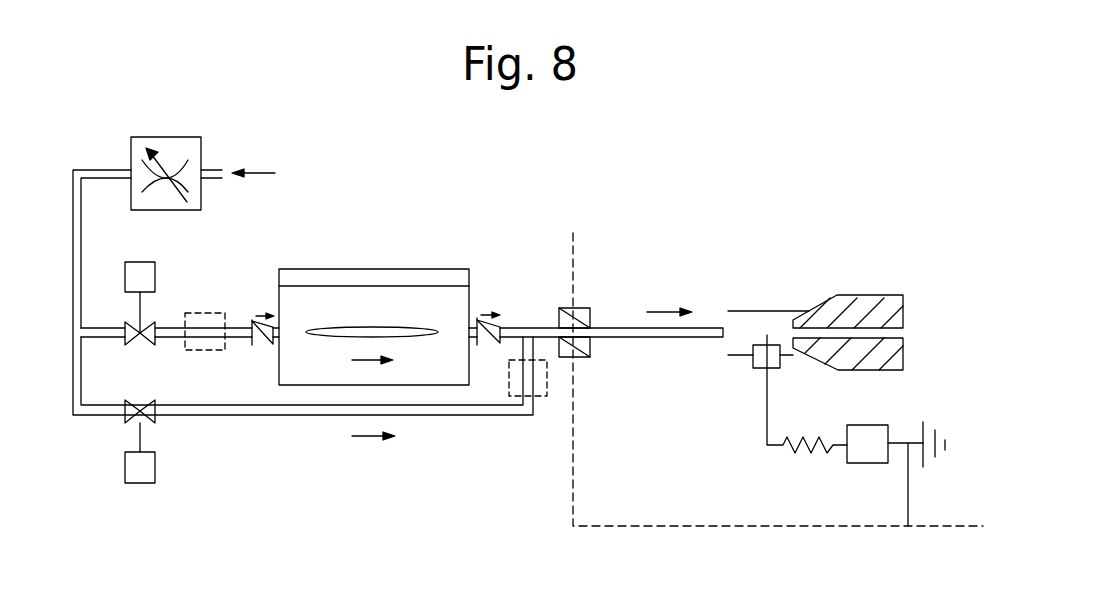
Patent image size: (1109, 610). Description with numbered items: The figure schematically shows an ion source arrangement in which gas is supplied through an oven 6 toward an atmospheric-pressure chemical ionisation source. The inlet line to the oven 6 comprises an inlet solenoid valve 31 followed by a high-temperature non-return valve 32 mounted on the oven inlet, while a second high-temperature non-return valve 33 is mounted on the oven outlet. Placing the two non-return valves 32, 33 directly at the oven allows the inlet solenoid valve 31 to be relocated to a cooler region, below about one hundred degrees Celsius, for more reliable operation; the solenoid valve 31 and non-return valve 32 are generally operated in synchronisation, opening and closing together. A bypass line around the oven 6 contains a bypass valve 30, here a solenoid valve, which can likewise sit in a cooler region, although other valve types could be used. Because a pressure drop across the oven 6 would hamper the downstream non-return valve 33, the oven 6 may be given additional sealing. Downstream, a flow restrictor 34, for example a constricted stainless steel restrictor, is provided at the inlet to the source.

The oven 6 is at (313, 385).
The bypass valve 30 is at (127, 418).
The inlet solenoid valve 31 is at (132, 323).
The non-return valve 32 is at (257, 317).
The non-return valve 33 is at (483, 312).
The flow restrictor 34 is at (674, 338).